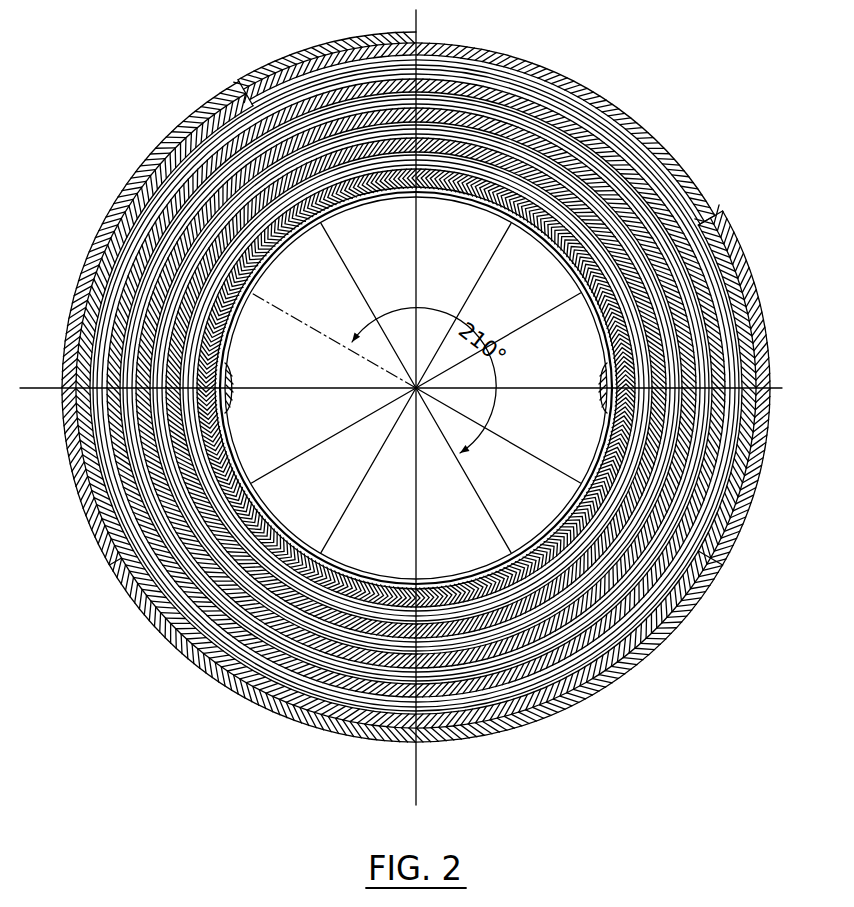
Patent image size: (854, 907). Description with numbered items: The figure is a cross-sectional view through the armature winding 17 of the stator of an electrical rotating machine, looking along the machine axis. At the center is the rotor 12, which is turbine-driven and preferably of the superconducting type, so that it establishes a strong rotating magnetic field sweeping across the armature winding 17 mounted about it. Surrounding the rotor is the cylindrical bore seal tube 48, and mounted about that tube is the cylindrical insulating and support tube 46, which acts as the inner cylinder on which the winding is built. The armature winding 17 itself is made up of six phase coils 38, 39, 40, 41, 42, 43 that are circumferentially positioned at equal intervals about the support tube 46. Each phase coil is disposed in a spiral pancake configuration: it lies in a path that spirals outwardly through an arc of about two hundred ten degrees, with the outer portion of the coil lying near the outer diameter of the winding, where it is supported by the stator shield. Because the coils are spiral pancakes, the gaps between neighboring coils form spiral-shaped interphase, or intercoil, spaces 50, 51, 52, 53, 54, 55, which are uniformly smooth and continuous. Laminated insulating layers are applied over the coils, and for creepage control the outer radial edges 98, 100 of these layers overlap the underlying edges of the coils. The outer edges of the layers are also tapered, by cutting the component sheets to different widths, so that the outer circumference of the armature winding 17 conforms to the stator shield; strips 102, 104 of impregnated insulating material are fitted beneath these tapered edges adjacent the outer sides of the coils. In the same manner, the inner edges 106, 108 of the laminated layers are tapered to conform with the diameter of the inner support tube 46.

The armature winding 17 is at (186, 91).
The rotor 12 is at (246, 352).
The phase coil 38 is at (300, 707).
The phase coil 39 is at (74, 418).
The phase coil 40 is at (228, 100).
The phase coil 41 is at (565, 72).
The phase coil 42 is at (760, 346).
The phase coil 43 is at (605, 679).
The cylindrical insulating and support tube 46 is at (397, 588).
The cylindrical bore seal tube 48 is at (447, 588).
The interphase space 50 is at (640, 153).
The interphase space 51 is at (680, 177).
The interphase space 52 is at (707, 270).
The interphase space 53 is at (612, 593).
The interphase space 54 is at (133, 589).
The interphase space 55 is at (112, 488).
The outer radial edge of laminated layer 98 is at (623, 102).
The outer radial edge of laminated layer 100 is at (766, 414).
The strip of impregnated insulating material 102 is at (721, 203).
The strip of impregnated insulating material 104 is at (729, 549).
The inner edge of laminated layer 106 is at (500, 196).
The inner edge of laminated layer 108 is at (597, 340).